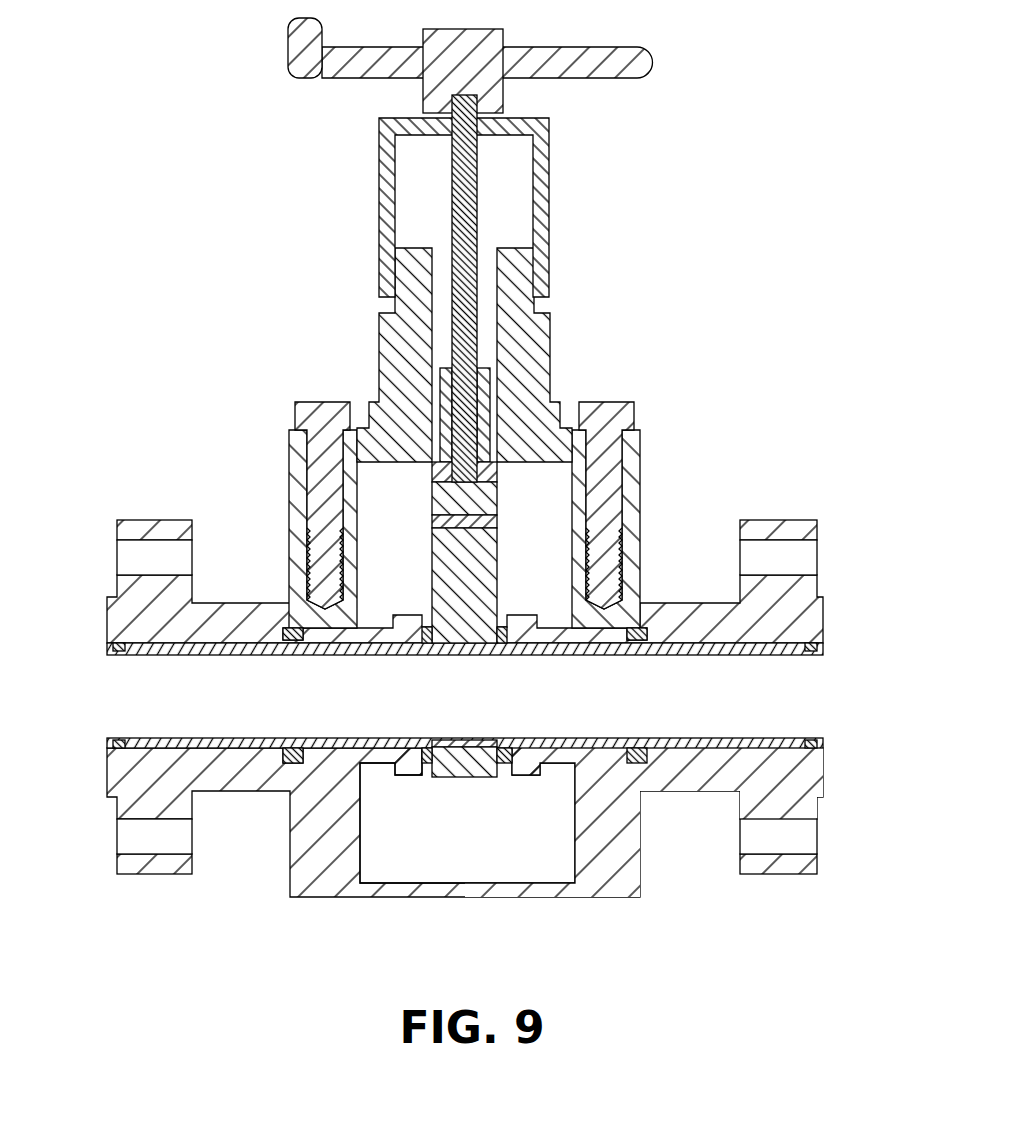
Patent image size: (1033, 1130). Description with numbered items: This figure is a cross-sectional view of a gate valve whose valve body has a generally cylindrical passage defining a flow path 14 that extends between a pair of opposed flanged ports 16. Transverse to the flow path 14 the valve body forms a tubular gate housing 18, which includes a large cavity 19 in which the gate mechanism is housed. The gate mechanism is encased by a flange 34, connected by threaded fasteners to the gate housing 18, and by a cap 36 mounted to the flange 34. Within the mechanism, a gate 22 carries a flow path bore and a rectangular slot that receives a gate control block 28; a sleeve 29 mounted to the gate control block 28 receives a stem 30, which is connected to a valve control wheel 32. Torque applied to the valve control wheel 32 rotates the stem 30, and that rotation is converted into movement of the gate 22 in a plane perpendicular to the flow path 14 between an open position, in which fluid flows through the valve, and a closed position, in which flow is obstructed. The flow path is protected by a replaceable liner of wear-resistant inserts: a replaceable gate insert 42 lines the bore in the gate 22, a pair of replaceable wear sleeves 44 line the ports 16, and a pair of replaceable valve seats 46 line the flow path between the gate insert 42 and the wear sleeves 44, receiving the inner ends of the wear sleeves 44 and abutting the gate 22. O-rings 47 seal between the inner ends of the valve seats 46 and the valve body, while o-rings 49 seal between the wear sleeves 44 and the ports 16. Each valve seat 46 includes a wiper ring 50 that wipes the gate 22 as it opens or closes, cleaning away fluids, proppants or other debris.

The flow path 14 is at (98, 690).
The flanged ports 16 is at (162, 520).
The gate housing 18 is at (307, 875).
The cavity 19 is at (590, 757).
The gate 22 is at (485, 547).
The gate control block 28 is at (487, 493).
The sleeve 29 is at (475, 337).
The stem 30 is at (552, 332).
The valve control wheel 32 is at (650, 66).
The flange 34 is at (300, 468).
The cap 36 is at (386, 180).
The replaceable gate insert 42 is at (548, 843).
The replaceable wear sleeves 44 is at (773, 637).
The replaceable valve seats 46 is at (330, 765).
The o-rings 47 is at (293, 627).
The o-rings 49 is at (117, 643).
The wiper ring 50 is at (510, 627).